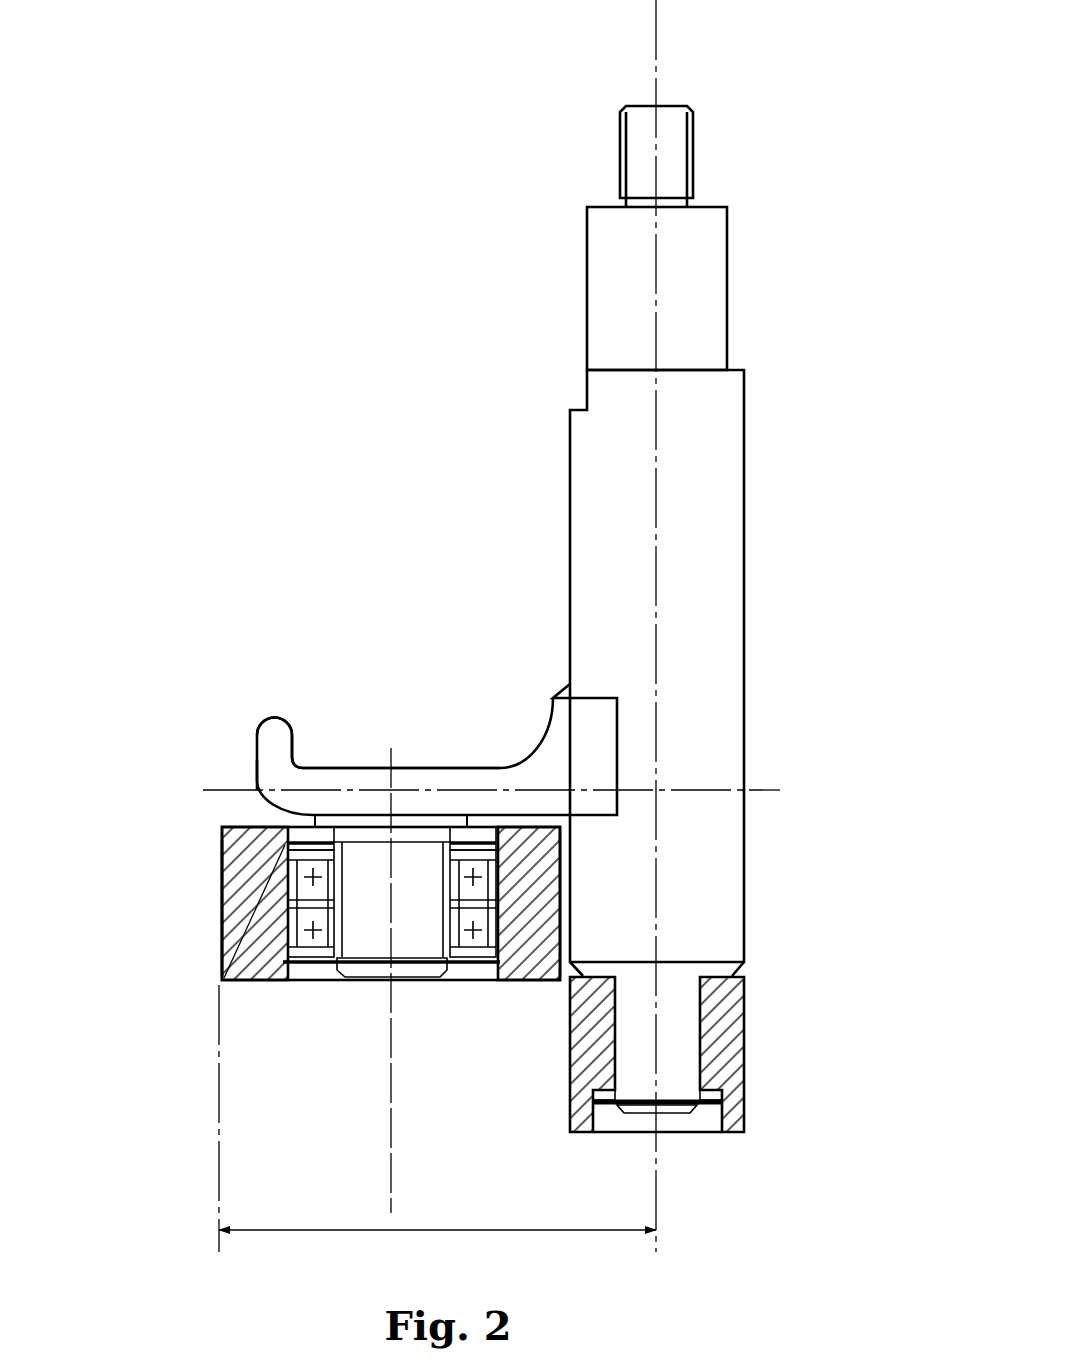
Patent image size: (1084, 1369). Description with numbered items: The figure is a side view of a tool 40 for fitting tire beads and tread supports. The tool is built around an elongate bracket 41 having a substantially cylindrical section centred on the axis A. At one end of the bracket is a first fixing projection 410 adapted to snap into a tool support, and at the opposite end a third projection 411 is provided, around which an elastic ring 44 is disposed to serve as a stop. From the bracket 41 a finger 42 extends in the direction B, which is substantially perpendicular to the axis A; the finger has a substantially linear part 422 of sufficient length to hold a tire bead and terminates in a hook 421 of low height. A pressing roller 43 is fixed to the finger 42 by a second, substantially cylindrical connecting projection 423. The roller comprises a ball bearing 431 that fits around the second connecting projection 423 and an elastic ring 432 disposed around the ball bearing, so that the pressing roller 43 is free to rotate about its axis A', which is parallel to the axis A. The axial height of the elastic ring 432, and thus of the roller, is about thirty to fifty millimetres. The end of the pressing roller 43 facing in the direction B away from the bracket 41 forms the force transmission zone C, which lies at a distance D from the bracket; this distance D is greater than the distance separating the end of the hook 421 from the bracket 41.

The tool 40 is at (482, 665).
The bracket 41 is at (738, 536).
The first fixing projection 410 is at (675, 145).
The third projection 411 is at (678, 1065).
The finger 42 is at (380, 693).
The hook 421 is at (277, 750).
The substantially linear part 422 is at (378, 780).
The second connecting projection 423 is at (372, 902).
The pressing roller 43 is at (308, 929).
The ball bearing 431 is at (335, 827).
The elastic ring 432 is at (222, 985).
The elastic ring (stop) 44 is at (719, 1105).
The axis A is at (749, 626).
The axis of rotation A' is at (422, 980).
The direction B is at (258, 788).
The force transmission zone C is at (220, 977).
The distance D is at (437, 1118).